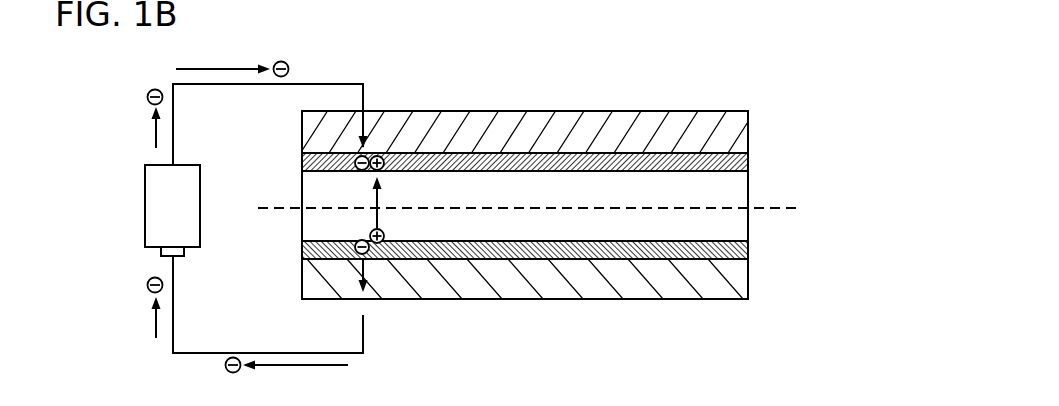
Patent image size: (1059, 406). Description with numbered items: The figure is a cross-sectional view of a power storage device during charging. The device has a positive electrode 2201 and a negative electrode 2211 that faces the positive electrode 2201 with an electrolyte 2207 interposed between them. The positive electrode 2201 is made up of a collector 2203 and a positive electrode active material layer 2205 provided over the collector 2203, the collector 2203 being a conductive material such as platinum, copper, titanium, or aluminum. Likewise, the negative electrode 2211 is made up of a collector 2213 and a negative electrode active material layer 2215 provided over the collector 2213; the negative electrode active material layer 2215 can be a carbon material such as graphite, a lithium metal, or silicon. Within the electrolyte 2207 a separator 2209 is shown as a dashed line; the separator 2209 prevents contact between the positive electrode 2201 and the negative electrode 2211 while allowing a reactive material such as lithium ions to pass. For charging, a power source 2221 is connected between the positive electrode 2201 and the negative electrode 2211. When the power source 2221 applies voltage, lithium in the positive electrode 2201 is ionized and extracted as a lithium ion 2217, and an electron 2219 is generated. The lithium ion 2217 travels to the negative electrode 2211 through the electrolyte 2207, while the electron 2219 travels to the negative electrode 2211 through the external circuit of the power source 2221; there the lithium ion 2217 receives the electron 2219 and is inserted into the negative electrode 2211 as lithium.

The positive electrode 2201 is at (534, 269).
The collector 2203 is at (727, 283).
The positive electrode active material layer 2205 is at (735, 250).
The electrolyte 2207 is at (316, 190).
The separator 2209 is at (770, 208).
The negative electrode 2211 is at (537, 142).
The collector 2213 is at (730, 128).
The negative electrode active material layer 2215 is at (745, 161).
The lithium ion 2217 is at (385, 232).
The electron 2219 is at (376, 259).
The power source 2221 is at (160, 218).